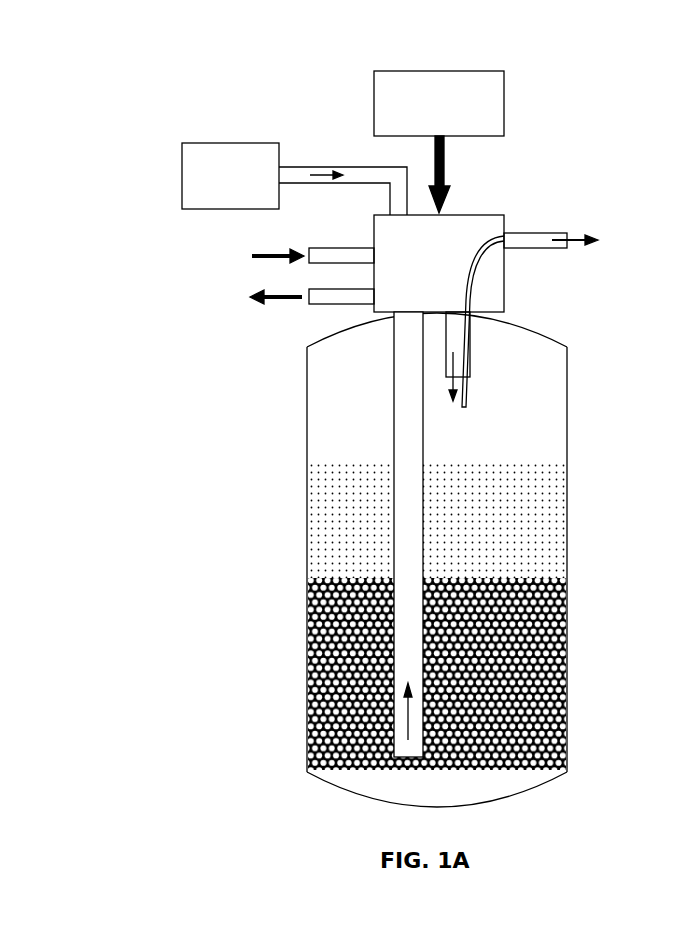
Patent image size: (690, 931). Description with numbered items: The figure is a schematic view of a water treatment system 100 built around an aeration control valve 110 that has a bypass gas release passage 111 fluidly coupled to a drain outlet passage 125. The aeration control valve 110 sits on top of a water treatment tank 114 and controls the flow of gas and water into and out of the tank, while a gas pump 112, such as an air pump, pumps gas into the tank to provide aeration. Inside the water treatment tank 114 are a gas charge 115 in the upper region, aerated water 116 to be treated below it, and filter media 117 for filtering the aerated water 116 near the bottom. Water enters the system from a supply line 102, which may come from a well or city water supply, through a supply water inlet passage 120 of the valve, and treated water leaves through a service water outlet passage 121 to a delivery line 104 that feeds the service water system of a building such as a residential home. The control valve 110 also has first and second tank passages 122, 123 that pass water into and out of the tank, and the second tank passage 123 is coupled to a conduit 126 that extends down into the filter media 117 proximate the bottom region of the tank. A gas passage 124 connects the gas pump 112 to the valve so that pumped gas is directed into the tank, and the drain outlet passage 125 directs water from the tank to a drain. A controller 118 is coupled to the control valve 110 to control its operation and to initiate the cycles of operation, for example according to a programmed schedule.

The water treatment system 100 is at (584, 106).
The supply line 102 is at (262, 256).
The delivery line 104 is at (284, 306).
The aeration control valve 110 is at (492, 214).
The bypass gas release passage 111 is at (479, 271).
The gas pump 112 is at (182, 168).
The water treatment tank 114 is at (307, 397).
The gas charge 115 is at (357, 444).
The aerated water 116 is at (362, 514).
The filter media 117 is at (357, 677).
The controller 118 is at (440, 70).
The supply water inlet passage 120 is at (364, 250).
The service water outlet passage 121 is at (362, 304).
The first tank passage 122 is at (468, 365).
The second tank passage 123 is at (403, 325).
The gas passage 124 is at (391, 204).
The drain outlet passage 125 is at (532, 233).
The conduit 126 is at (426, 571).